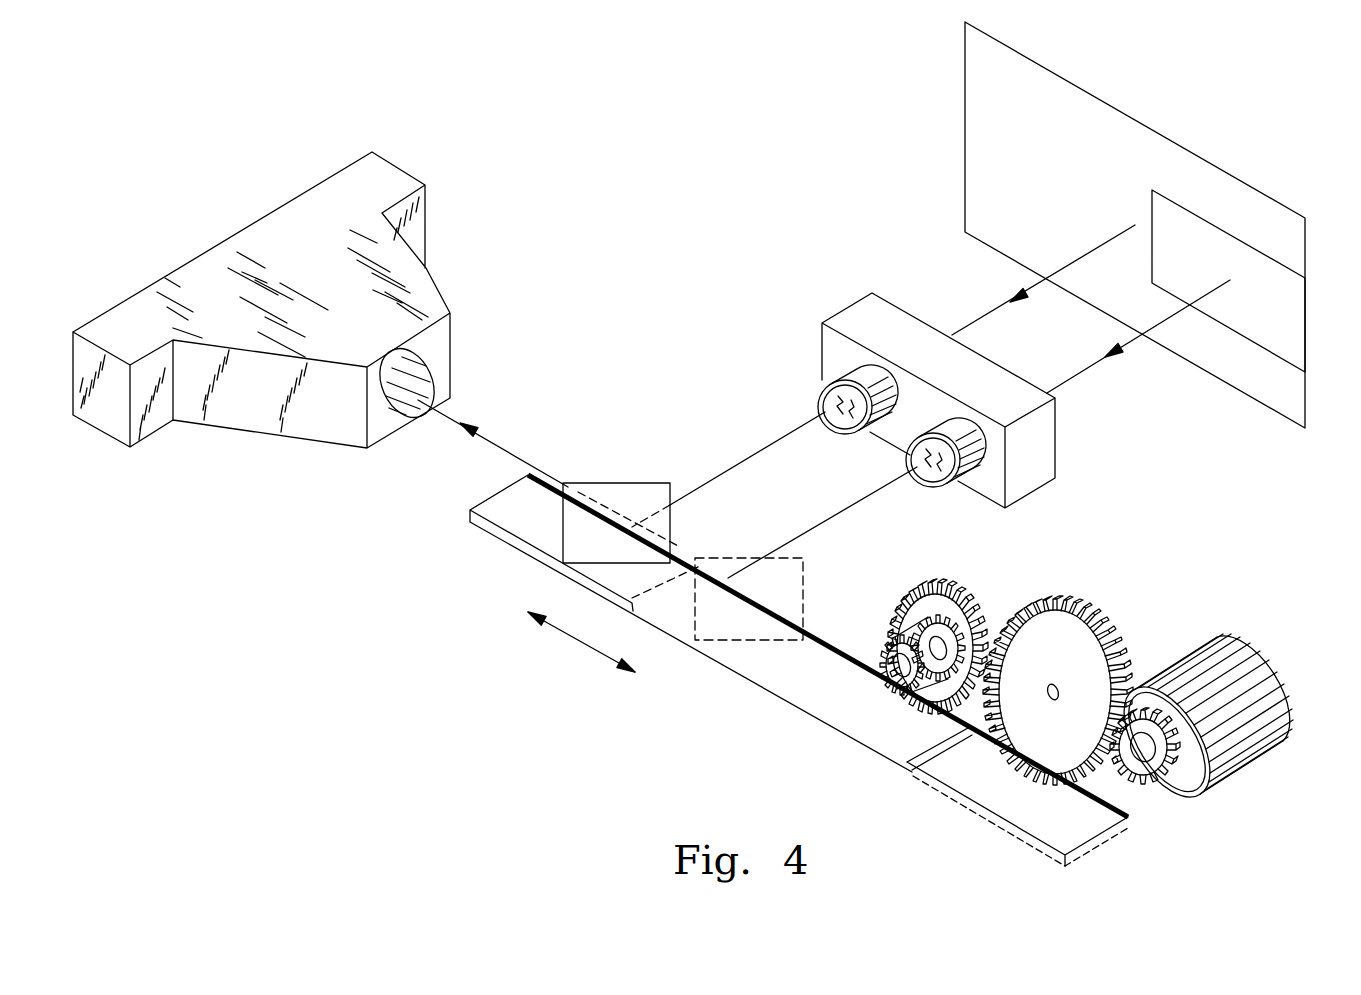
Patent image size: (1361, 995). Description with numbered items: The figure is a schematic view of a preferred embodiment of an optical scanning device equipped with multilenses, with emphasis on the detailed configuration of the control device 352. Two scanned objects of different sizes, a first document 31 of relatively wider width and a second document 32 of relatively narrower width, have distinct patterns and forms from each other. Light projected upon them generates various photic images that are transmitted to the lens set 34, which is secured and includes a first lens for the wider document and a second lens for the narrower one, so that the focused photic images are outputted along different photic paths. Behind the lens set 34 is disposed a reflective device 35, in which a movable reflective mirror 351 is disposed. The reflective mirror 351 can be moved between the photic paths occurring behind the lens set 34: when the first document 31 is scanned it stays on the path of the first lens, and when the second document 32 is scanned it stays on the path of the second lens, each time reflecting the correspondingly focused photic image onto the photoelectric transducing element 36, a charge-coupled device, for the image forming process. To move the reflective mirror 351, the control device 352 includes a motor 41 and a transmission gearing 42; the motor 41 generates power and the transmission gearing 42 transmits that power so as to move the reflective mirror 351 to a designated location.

The first document 31 is at (1133, 120).
The second document 32 is at (1220, 227).
The lens set 34 is at (865, 291).
The reflective device 35 is at (802, 753).
The reflective mirror 351 is at (757, 558).
The control device 352 is at (1302, 577).
The photoelectric transducing element 36 is at (405, 165).
The motor 41 is at (1253, 640).
The transmission gearing 42 is at (963, 597).